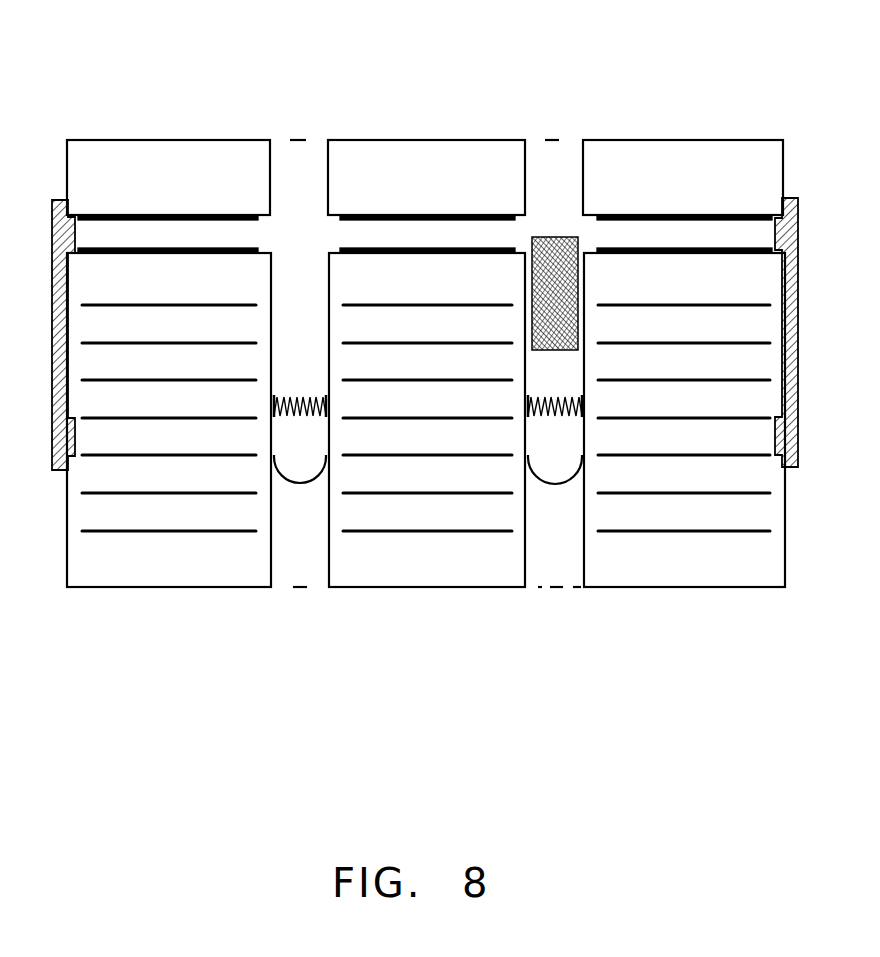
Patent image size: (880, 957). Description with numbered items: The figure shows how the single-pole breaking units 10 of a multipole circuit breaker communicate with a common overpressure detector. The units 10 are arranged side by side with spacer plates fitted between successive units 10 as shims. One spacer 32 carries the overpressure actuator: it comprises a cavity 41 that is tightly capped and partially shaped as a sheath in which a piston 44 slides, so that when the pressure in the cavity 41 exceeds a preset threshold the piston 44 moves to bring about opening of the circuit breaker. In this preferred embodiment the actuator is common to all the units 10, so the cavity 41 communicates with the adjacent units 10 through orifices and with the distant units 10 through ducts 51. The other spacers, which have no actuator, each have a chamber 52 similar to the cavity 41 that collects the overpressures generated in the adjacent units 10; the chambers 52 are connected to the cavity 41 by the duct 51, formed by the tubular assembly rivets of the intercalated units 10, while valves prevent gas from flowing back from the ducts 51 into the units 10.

The single-pole breaking unit 10 is at (172, 588).
The spacer plate 32 is at (553, 178).
The cavity 41 is at (564, 457).
The piston 44 is at (582, 258).
The duct 51 is at (418, 233).
The chamber 52 is at (311, 457).